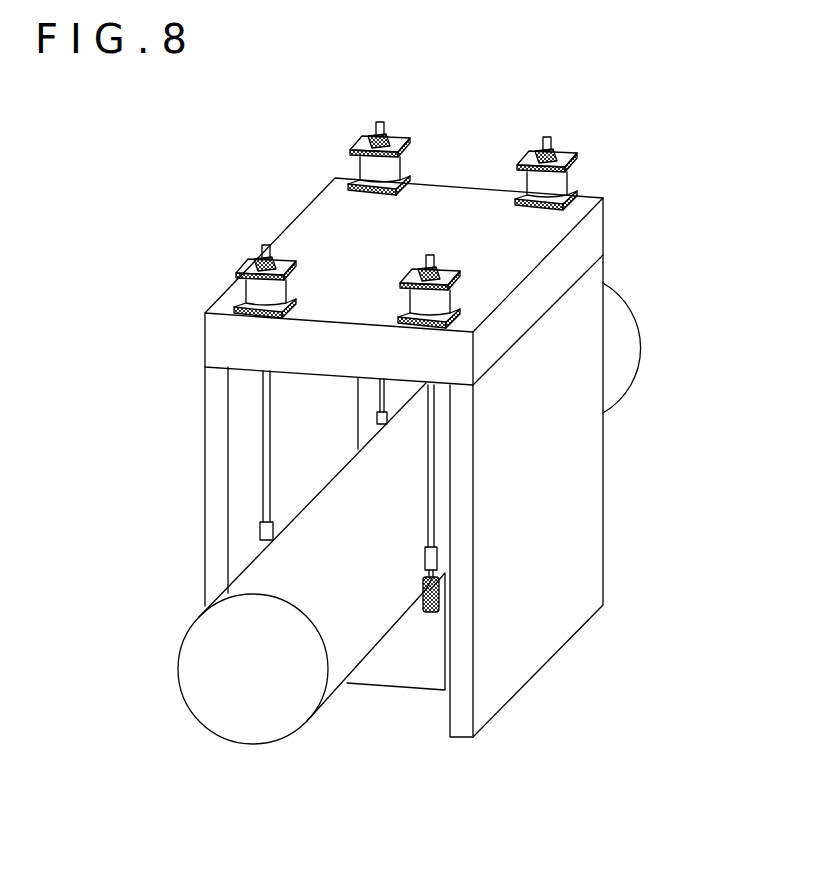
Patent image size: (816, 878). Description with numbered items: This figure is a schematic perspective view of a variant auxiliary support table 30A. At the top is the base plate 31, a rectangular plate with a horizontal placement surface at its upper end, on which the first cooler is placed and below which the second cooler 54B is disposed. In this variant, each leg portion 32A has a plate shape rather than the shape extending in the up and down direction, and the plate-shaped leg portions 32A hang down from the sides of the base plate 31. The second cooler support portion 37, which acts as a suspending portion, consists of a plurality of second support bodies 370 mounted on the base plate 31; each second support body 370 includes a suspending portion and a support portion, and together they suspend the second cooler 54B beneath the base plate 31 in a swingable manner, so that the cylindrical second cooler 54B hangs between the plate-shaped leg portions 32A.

The auxiliary support table 30A is at (605, 127).
The base plate 31 is at (589, 196).
The leg portion 32A is at (206, 472).
The second cooler support portion 37 is at (257, 87).
The second support body 370 is at (518, 178).
The second cooler 54B is at (246, 747).